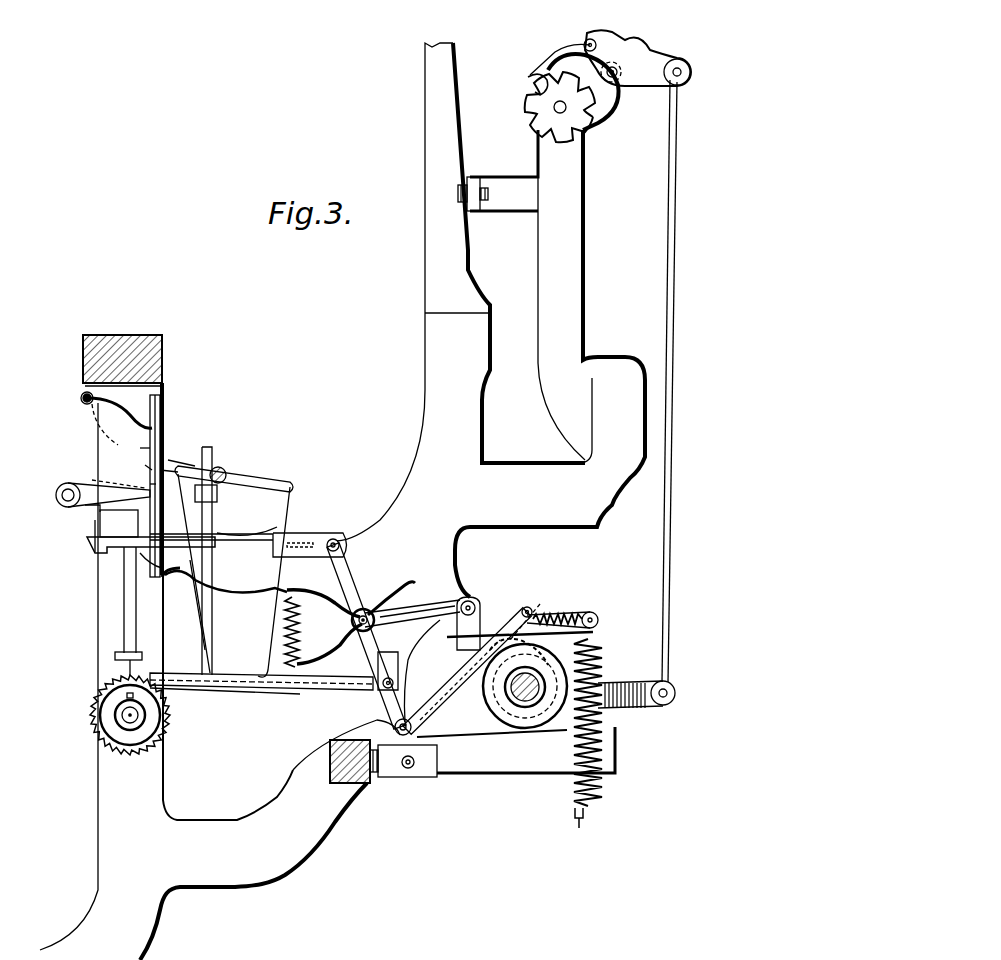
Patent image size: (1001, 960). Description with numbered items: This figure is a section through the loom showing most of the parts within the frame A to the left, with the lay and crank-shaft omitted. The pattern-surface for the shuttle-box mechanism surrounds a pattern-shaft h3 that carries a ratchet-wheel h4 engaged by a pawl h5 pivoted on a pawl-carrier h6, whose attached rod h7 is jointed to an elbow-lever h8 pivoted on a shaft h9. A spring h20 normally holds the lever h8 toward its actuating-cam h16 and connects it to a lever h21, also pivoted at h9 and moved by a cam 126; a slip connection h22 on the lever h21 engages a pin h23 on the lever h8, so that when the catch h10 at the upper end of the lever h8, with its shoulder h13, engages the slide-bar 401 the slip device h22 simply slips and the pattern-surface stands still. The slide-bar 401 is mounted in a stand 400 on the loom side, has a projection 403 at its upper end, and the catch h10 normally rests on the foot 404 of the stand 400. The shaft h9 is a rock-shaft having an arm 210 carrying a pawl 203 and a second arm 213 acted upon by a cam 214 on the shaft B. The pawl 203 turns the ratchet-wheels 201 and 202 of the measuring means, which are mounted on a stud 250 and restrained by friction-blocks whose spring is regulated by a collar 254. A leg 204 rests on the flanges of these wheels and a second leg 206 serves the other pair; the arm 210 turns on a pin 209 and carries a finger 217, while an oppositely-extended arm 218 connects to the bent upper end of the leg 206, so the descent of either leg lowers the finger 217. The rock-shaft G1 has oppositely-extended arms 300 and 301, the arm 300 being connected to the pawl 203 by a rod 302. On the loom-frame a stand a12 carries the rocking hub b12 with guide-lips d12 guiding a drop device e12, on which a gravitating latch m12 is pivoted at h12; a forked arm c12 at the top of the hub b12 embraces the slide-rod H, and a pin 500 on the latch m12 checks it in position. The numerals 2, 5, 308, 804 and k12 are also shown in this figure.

The frame A is at (425, 405).
The shaft B is at (528, 705).
The pivot H is at (84, 398).
The cam shaft 2 is at (495, 712).
The pivot pin 5 is at (84, 396).
The cam 126 is at (500, 730).
The ratchet-wheel 201 is at (122, 487).
The ratchet-wheel 202 is at (100, 750).
The pawl 203 is at (240, 689).
The leg 204 is at (122, 610).
The second leg 206 is at (95, 532).
The pin 209 is at (56, 495).
The arm 210 is at (392, 662).
The second arm 213 is at (512, 620).
The cam 214 is at (548, 665).
The finger 217 is at (100, 510).
The oppositely-extended arm 218 is at (92, 480).
The stud 250 is at (122, 715).
The collar 254 is at (115, 720).
The arm 300 is at (282, 482).
The arm 301 is at (182, 462).
The rod 302 is at (282, 530).
The plate 308 is at (205, 640).
The stand 400 is at (240, 490).
The slide-bar 401 is at (214, 520).
The projection 403 is at (210, 450).
The foot 404 is at (95, 422).
The pin 500 is at (119, 523).
The bar 804 is at (200, 676).
The rock-shaft G1 is at (222, 468).
The stand a12 is at (190, 465).
The rocking hub or shaft b12 is at (134, 445).
The forked arm c12 is at (130, 420).
The guide-lips d12 is at (151, 569).
The drop device e12 is at (162, 435).
The pin k12 is at (143, 460).
The gravitating latch m12 is at (143, 481).
The pivot h12 is at (87, 545).
The pattern-shaft h3 is at (556, 109).
The ratchet-wheel h4 is at (546, 86).
The pawl h5 is at (586, 48).
The pawl-carrier h6 is at (628, 48).
The rod h7 is at (669, 207).
The elbow-lever h8 is at (348, 545).
The shaft h9 is at (402, 780).
The catch h10 is at (262, 560).
The shoulder h13 is at (173, 585).
The actuating-cam h16 is at (540, 604).
The spring h20 is at (602, 650).
The lever h21 is at (588, 612).
The slip connection h22 is at (340, 614).
The pin h23 is at (372, 618).